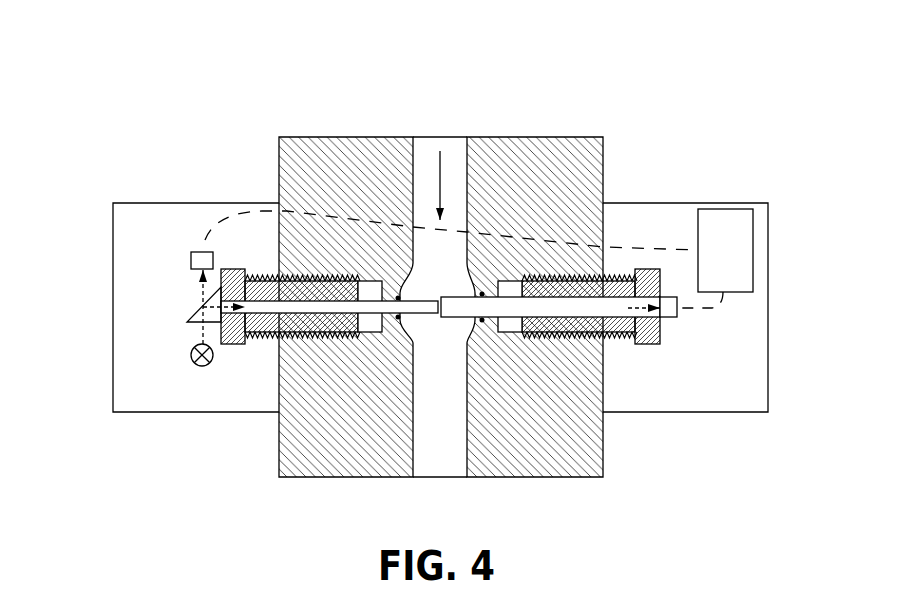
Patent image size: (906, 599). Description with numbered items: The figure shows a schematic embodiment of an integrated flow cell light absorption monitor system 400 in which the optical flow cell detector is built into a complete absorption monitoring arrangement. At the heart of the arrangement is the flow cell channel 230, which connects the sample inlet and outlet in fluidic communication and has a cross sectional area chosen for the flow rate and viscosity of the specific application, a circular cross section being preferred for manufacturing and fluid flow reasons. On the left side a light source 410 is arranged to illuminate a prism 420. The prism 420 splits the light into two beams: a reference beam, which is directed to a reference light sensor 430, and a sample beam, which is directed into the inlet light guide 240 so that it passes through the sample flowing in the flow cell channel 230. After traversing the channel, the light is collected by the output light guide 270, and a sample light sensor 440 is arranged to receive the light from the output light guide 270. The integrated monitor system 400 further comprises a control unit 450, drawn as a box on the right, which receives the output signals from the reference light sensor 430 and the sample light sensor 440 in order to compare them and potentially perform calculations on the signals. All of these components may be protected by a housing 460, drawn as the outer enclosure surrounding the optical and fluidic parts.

The integrated flow cell light absorption monitor system 400 is at (212, 90).
The flow cell channel 230 is at (452, 397).
The inlet light guide 240 is at (328, 308).
The output light guide 270 is at (597, 310).
The light source 410 is at (199, 377).
The prism 420 is at (183, 313).
The reference light sensor 430 is at (197, 250).
The sample light sensor 440 is at (682, 322).
The controller / detector unit 450 is at (753, 258).
The housing 460 is at (110, 392).